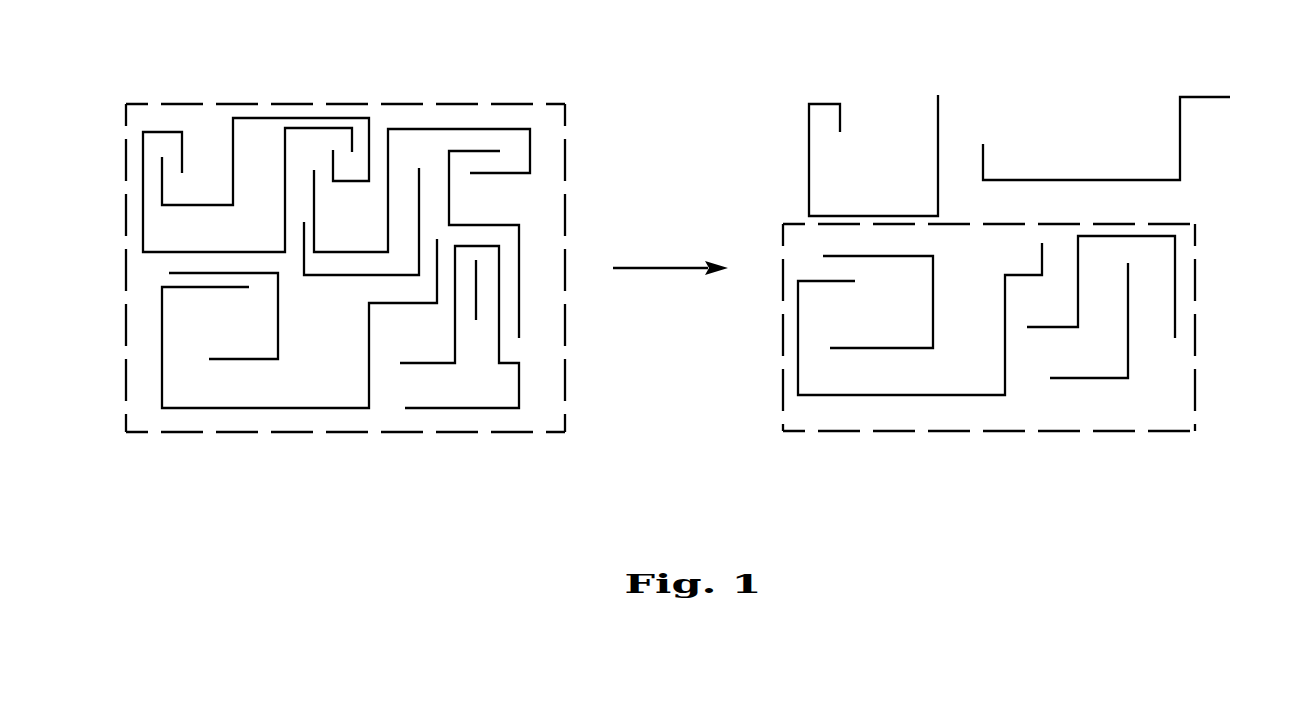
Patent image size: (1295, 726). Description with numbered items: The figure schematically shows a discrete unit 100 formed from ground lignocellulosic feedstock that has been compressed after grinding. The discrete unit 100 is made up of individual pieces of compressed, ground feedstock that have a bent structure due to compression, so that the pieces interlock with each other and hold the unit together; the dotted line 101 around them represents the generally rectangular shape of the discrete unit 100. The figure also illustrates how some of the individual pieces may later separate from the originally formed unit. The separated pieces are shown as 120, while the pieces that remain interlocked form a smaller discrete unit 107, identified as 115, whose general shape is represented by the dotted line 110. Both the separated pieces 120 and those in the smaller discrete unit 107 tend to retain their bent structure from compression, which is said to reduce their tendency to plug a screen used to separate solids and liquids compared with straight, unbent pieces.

The discrete unit 100 is at (357, 66).
The dotted line 101 is at (517, 432).
The smaller discrete unit 107 is at (1045, 462).
The dotted line 110 is at (941, 431).
The remaining interlocked pieces 115 is at (1205, 224).
The separated pieces 120 is at (1233, 92).